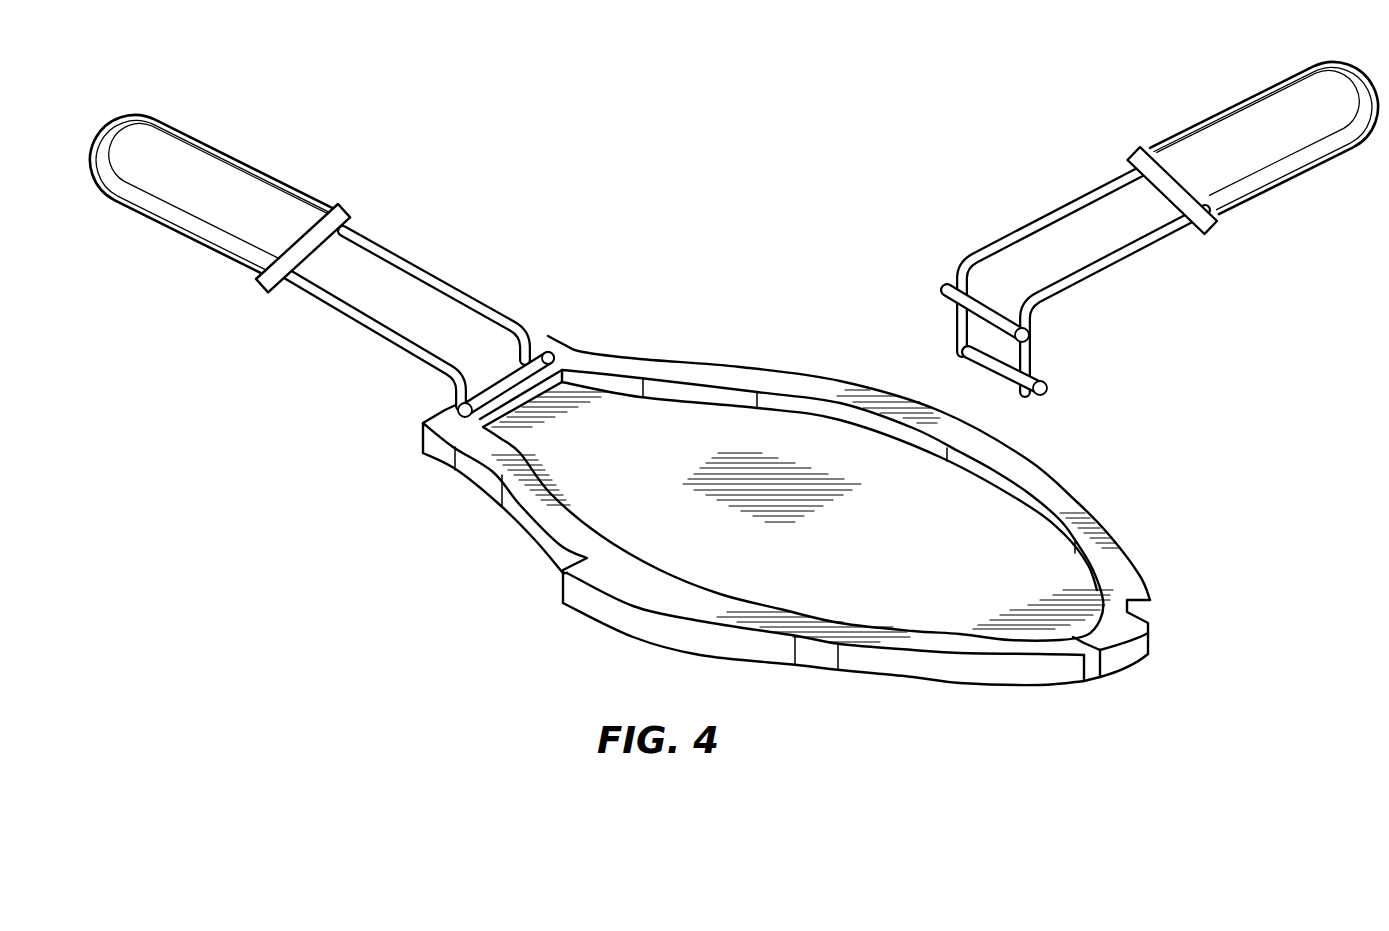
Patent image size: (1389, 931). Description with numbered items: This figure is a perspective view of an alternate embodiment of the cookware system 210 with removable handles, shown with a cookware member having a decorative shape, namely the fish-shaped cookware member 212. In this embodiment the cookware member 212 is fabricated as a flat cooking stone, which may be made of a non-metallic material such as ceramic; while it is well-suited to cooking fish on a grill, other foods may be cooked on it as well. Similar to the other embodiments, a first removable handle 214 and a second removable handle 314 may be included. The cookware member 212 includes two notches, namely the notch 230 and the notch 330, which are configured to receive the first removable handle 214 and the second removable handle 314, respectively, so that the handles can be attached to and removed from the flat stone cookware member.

The cookware system 210 is at (831, 470).
The fish-shaped cookware member 212 is at (1080, 475).
The first removable handle 214 is at (313, 122).
The notch 230 is at (490, 367).
The second removable handle 314 is at (1049, 148).
The notch 330 is at (1127, 654).